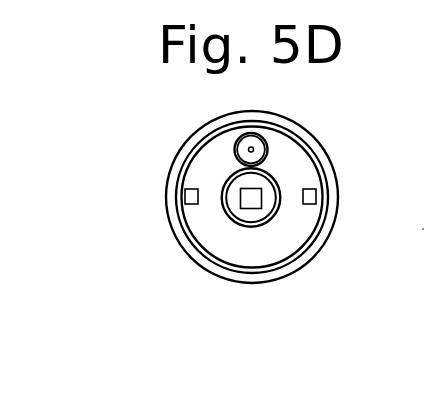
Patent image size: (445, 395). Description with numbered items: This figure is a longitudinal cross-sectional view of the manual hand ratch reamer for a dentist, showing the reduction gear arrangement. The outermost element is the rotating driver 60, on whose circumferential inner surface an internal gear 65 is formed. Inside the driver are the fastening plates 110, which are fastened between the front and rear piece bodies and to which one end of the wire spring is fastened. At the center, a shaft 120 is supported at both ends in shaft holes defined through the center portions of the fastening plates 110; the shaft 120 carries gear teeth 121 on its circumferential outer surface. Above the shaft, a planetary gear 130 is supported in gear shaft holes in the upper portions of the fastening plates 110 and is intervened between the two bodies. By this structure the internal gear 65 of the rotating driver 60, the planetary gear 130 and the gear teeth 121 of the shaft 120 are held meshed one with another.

The rotating driver 60 is at (298, 129).
The internal gear 65 is at (301, 165).
The fastening plates 110 is at (277, 246).
The shaft 120 is at (233, 213).
The gear teeth 121 is at (222, 182).
The planetary gear 130 is at (245, 143).